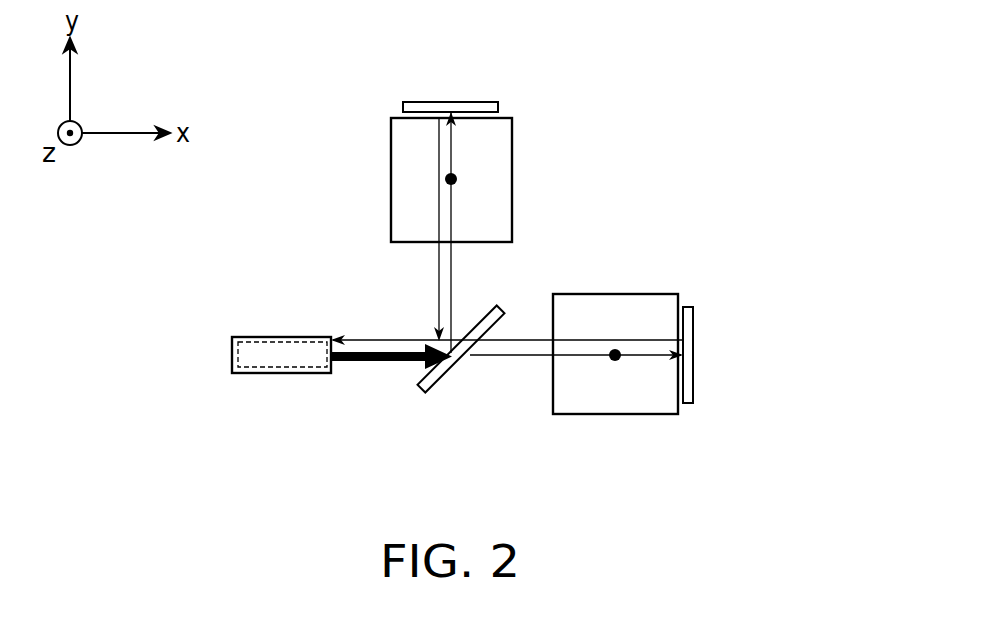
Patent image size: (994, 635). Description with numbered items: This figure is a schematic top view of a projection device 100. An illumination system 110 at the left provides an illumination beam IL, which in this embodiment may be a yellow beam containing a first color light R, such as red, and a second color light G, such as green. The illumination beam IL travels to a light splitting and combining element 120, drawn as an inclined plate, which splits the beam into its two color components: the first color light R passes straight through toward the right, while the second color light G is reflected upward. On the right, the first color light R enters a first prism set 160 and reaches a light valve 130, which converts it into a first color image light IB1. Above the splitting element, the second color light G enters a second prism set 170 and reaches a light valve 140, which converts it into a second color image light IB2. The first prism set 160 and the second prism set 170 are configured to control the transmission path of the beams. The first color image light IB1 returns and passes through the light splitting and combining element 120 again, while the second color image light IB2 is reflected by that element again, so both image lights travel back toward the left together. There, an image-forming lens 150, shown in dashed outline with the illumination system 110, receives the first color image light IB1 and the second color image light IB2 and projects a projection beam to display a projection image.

The projection device 100 is at (885, 482).
The illumination system 110 is at (238, 352).
The light splitting and combining element 120 is at (442, 375).
The light valve 130 is at (694, 380).
The light valve 140 is at (477, 103).
The image-forming lens 150 is at (245, 337).
The first prism set 160 is at (621, 306).
The second prism set 170 is at (408, 175).
The illumination beam IL is at (373, 363).
The first color image light IB1 is at (532, 338).
The second color image light IB2 is at (436, 265).
The first color light R is at (524, 357).
The second color light G is at (452, 265).